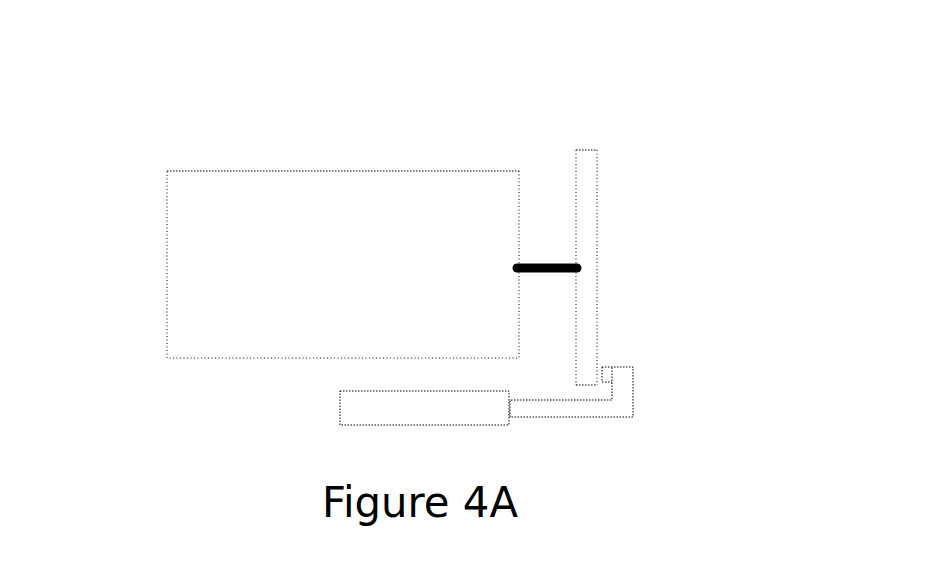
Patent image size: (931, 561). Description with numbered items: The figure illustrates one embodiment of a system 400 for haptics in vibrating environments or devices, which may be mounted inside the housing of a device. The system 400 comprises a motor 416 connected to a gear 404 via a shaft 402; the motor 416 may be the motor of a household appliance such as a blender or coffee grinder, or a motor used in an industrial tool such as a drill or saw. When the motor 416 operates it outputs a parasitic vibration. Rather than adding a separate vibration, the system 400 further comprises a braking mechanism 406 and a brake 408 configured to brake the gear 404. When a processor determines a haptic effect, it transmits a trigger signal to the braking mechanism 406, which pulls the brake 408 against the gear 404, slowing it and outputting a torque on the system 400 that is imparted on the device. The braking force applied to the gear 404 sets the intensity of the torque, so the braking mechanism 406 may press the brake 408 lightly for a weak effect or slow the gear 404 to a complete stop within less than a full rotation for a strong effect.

The system 400 is at (762, 125).
The shaft 402 is at (552, 262).
The gear 404 is at (595, 177).
The braking mechanism 406 is at (340, 423).
The brake 408 is at (633, 395).
The motor 416 is at (175, 197).